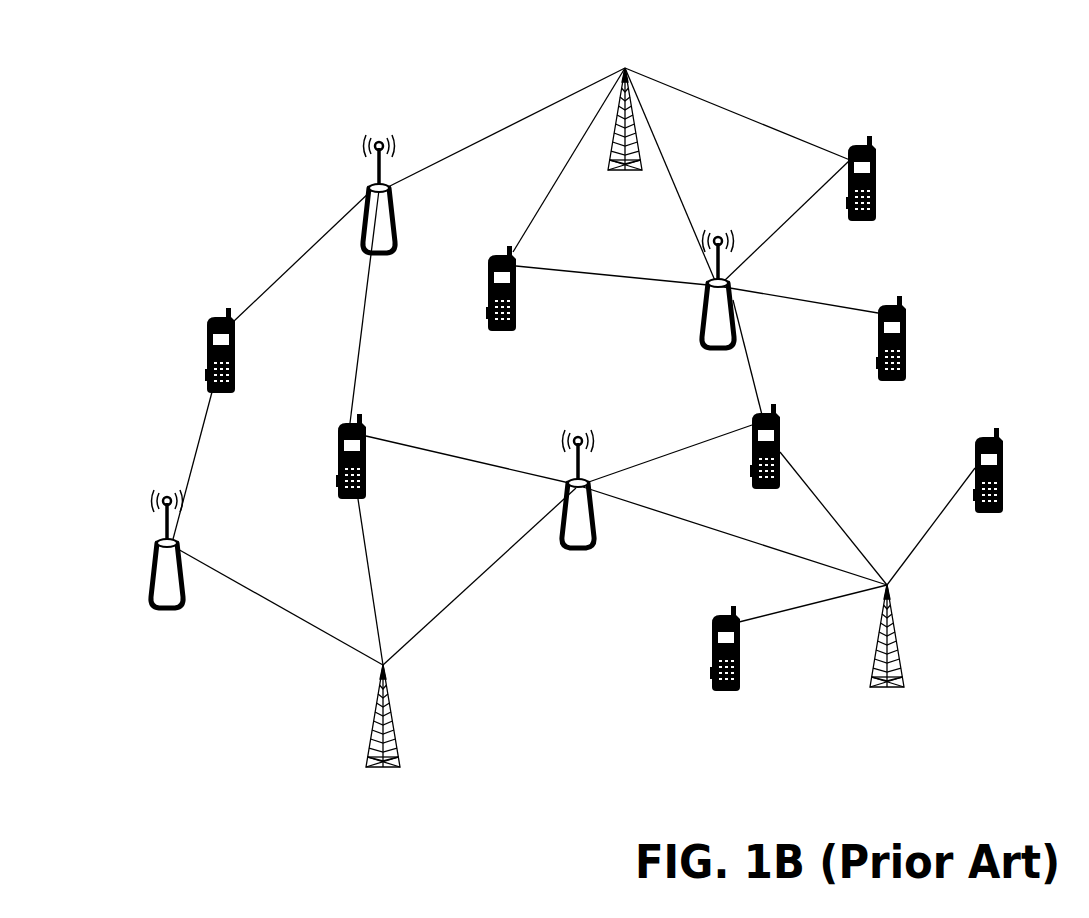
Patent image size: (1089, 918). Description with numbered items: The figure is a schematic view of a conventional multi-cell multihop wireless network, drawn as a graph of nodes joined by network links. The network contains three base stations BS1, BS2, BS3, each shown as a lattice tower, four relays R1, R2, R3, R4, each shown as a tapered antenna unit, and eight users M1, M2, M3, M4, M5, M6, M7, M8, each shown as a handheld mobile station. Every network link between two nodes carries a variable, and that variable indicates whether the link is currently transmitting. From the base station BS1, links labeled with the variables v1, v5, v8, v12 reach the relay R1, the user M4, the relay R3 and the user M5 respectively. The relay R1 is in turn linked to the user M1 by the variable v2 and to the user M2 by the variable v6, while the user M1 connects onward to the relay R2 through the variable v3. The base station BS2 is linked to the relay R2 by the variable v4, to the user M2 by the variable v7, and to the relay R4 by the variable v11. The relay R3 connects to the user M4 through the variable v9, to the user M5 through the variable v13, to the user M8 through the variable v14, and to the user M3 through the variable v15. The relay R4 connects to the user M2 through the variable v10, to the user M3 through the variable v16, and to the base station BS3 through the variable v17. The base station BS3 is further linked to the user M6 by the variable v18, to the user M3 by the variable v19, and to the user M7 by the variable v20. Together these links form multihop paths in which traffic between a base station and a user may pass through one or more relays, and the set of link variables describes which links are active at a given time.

The base station BS1 is at (624, 95).
The base station BS2 is at (386, 739).
The base station BS3 is at (891, 660).
The relay R1 is at (360, 194).
The relay R2 is at (141, 549).
The relay R3 is at (693, 289).
The relay R4 is at (579, 509).
The user M1 is at (193, 350).
The user M2 is at (326, 456).
The user M3 is at (790, 446).
The user M4 is at (474, 288).
The user M5 is at (885, 178).
The user M6 is at (696, 648).
The user M7 is at (983, 492).
The user M8 is at (893, 357).
The network link variable v1 is at (505, 128).
The network link variable v2 is at (302, 256).
The network link variable v3 is at (187, 467).
The network link variable v4 is at (279, 606).
The network link variable v5 is at (569, 160).
The network link variable v6 is at (351, 306).
The network link variable v7 is at (361, 582).
The network link variable v8 is at (670, 175).
The network link variable v9 is at (617, 290).
The network link variable v10 is at (472, 449).
The network link variable v11 is at (479, 576).
The network link variable v12 is at (737, 114).
The network link variable v13 is at (786, 221).
The network link variable v14 is at (798, 291).
The network link variable v15 is at (762, 357).
The network link variable v16 is at (667, 449).
The network link variable v17 is at (735, 536).
The network link variable v18 is at (813, 613).
The network link variable v19 is at (833, 518).
The network link variable v20 is at (931, 526).